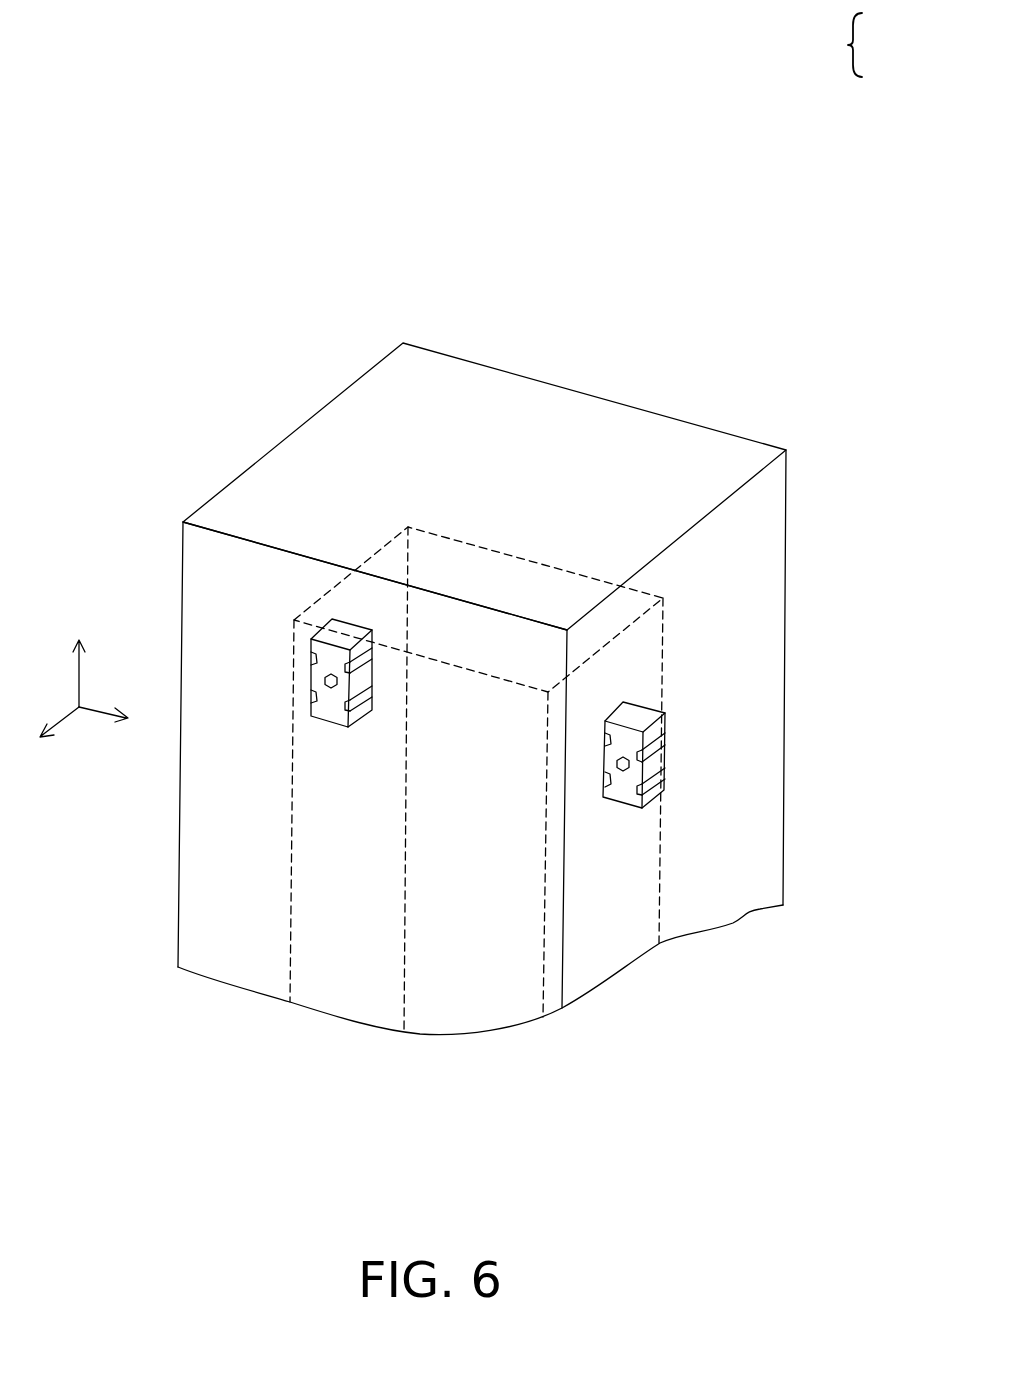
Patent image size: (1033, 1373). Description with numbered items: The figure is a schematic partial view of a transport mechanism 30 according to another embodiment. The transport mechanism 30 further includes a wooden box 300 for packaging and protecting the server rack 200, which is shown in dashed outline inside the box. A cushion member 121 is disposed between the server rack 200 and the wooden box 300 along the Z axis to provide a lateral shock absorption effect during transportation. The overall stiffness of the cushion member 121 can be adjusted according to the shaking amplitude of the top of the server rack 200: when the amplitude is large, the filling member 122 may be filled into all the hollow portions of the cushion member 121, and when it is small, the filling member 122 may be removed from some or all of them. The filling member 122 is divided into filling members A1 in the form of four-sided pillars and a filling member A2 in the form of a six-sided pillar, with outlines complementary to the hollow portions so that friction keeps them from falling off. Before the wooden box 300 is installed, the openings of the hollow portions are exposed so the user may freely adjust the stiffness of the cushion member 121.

The transport mechanism 30 is at (128, 1180).
The wooden box 300 is at (553, 382).
The server rack 200 is at (383, 557).
The cushion member 121 is at (628, 722).
The filling member 122 is at (850, 44).
The filling member A1 is at (624, 769).
The filling member A2 is at (657, 777).